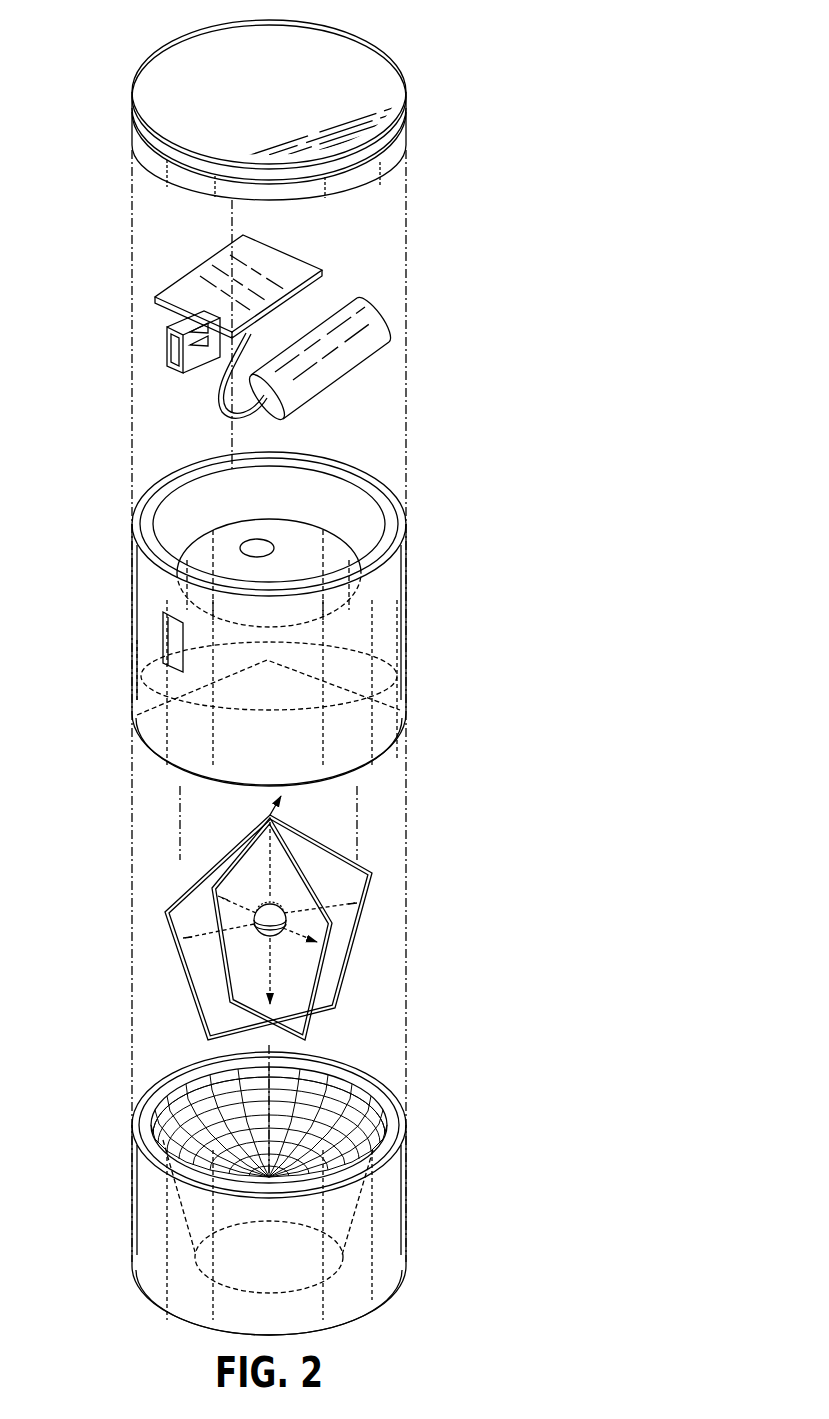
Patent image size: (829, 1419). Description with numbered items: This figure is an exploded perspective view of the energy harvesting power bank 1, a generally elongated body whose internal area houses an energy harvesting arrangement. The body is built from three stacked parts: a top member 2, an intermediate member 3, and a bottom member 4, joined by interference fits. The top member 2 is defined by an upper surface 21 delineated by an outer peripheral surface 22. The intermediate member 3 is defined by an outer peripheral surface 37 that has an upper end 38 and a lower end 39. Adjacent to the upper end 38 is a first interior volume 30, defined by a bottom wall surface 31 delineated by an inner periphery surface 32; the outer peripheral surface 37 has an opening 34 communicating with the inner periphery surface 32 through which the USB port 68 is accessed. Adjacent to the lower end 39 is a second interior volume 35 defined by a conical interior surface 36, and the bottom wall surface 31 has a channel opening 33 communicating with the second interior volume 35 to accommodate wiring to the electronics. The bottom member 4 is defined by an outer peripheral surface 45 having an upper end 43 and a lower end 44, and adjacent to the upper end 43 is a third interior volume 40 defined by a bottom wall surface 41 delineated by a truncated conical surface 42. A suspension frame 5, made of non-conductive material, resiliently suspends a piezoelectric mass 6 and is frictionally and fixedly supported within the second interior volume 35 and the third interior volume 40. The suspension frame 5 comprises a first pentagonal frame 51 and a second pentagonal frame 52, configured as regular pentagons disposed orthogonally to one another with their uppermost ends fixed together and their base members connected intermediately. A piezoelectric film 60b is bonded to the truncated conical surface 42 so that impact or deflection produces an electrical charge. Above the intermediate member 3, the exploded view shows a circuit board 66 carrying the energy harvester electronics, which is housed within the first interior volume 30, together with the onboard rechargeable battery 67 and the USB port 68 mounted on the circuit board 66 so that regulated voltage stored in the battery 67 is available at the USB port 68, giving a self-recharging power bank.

The energy harvesting power bank 1 is at (493, 447).
The top member 2 is at (275, 133).
The upper surface 21 is at (372, 78).
The outer peripheral surface 22 is at (405, 138).
The intermediate member 3 is at (282, 611).
The first interior volume 30 is at (211, 512).
The bottom wall surface 31 is at (298, 542).
The inner periphery surface 32 is at (325, 500).
The channel opening 33 is at (262, 545).
The opening 34 is at (163, 618).
The second interior volume 35 is at (380, 763).
The conical interior surface 36 is at (137, 697).
The outer peripheral surface 37 is at (143, 657).
The upper end 38 is at (143, 515).
The lower end 39 is at (166, 763).
The bottom member 4 is at (268, 1185).
The third interior volume 40 is at (320, 1130).
The bottom wall surface 41 is at (333, 1277).
The truncated conical surface 42 is at (157, 1233).
The upper end 43 is at (150, 1145).
The lower end 44 is at (150, 1303).
The outer peripheral surface 45 is at (387, 1242).
The suspension frame 5 is at (282, 918).
The first pentagonal frame 51 is at (348, 1003).
The second pentagonal frame 52 is at (323, 890).
The piezoelectric mass 6 is at (256, 941).
The piezoelectric film 60b is at (201, 1117).
The circuit board 66 is at (155, 300).
The rechargeable battery 67 is at (388, 317).
The USB port 68 is at (165, 352).